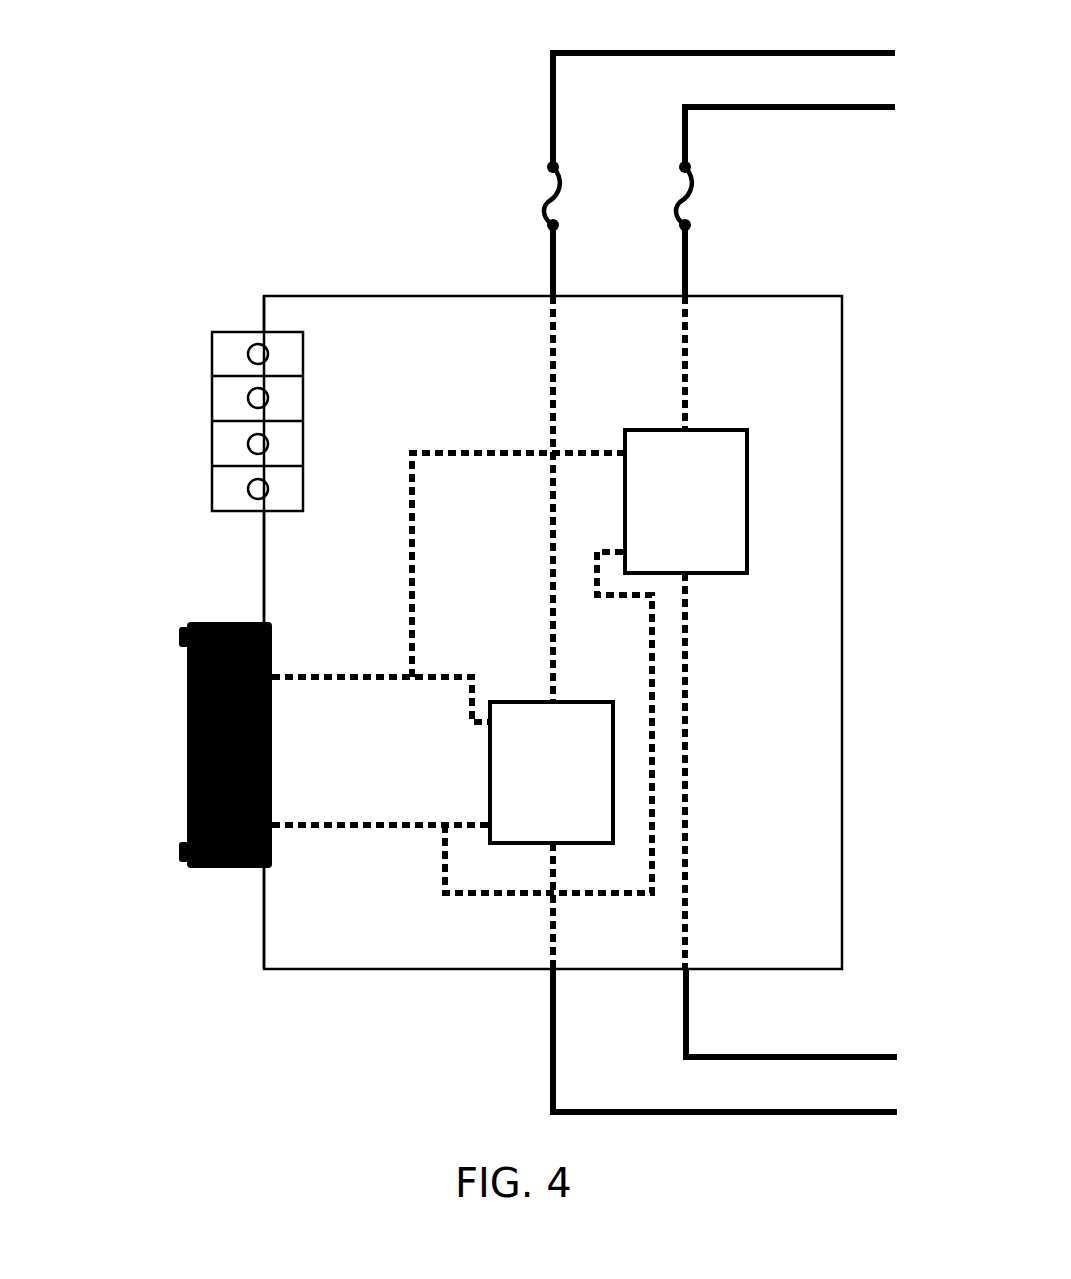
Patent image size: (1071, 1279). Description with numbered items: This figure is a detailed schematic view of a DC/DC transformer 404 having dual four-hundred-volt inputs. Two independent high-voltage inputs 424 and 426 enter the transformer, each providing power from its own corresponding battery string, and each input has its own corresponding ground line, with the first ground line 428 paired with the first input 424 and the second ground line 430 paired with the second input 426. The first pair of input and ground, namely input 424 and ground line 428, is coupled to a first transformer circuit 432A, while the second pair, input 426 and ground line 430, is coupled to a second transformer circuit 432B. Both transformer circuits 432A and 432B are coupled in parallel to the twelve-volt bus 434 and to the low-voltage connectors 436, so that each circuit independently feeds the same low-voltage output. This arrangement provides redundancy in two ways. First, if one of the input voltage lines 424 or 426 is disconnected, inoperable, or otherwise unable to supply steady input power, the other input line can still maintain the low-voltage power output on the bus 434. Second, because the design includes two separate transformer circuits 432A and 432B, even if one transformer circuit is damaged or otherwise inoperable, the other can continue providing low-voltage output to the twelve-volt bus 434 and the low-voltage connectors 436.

The DC/DC transformer 404 is at (193, 190).
The first 400V input 424 is at (703, 160).
The second 400V input 426 is at (787, 201).
The first ground line 428 is at (733, 1059).
The second ground line 430 is at (799, 1013).
The first transformer circuit 432A is at (554, 757).
The second transformer circuit 432B is at (720, 501).
The 12V bus 434 is at (183, 817).
The low-voltage connectors 436 is at (207, 464).